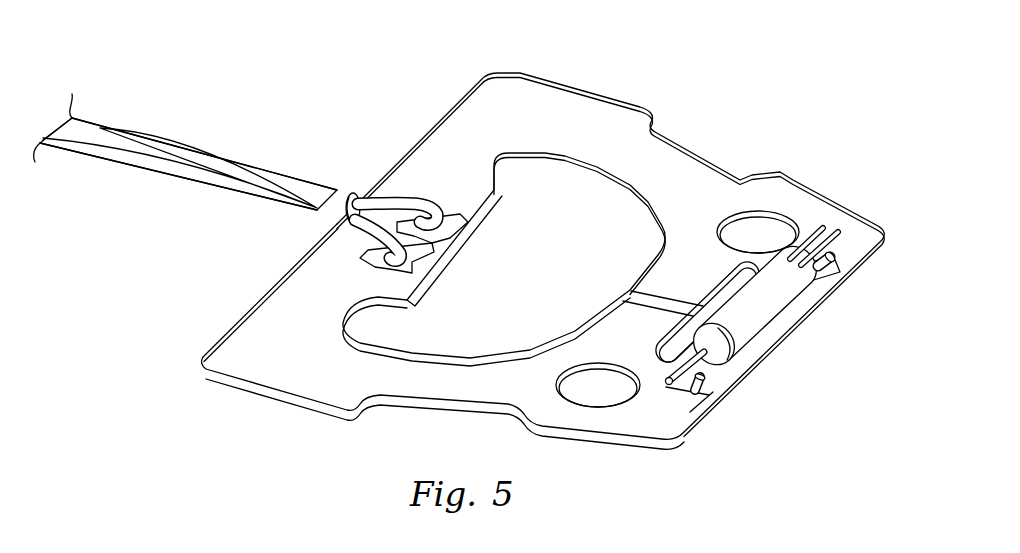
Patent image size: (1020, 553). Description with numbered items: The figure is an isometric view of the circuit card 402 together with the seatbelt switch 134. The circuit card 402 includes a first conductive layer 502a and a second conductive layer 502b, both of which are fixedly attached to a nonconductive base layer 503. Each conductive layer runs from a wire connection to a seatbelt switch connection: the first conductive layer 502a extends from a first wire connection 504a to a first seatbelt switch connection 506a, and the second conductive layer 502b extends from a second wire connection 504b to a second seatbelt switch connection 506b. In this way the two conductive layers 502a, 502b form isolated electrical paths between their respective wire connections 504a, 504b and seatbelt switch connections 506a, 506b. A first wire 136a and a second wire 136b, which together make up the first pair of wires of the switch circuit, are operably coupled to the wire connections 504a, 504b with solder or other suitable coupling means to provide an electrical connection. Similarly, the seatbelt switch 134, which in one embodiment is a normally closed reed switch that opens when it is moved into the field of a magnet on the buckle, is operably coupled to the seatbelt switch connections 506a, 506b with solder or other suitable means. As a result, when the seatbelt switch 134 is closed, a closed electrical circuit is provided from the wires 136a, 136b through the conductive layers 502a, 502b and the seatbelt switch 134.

The circuit card 402 is at (523, 289).
The first conductive layer 502a is at (443, 160).
The second conductive layer 502b is at (271, 320).
The nonconductive base layer 503 is at (633, 445).
The first wire connection 504a is at (467, 217).
The second wire connection 504b is at (428, 256).
The seatbelt switch 134 is at (752, 324).
The first seatbelt switch connection 506a is at (833, 278).
The second seatbelt switch connection 506b is at (720, 397).
The first wire 136a is at (83, 130).
The second wire 136b is at (213, 160).